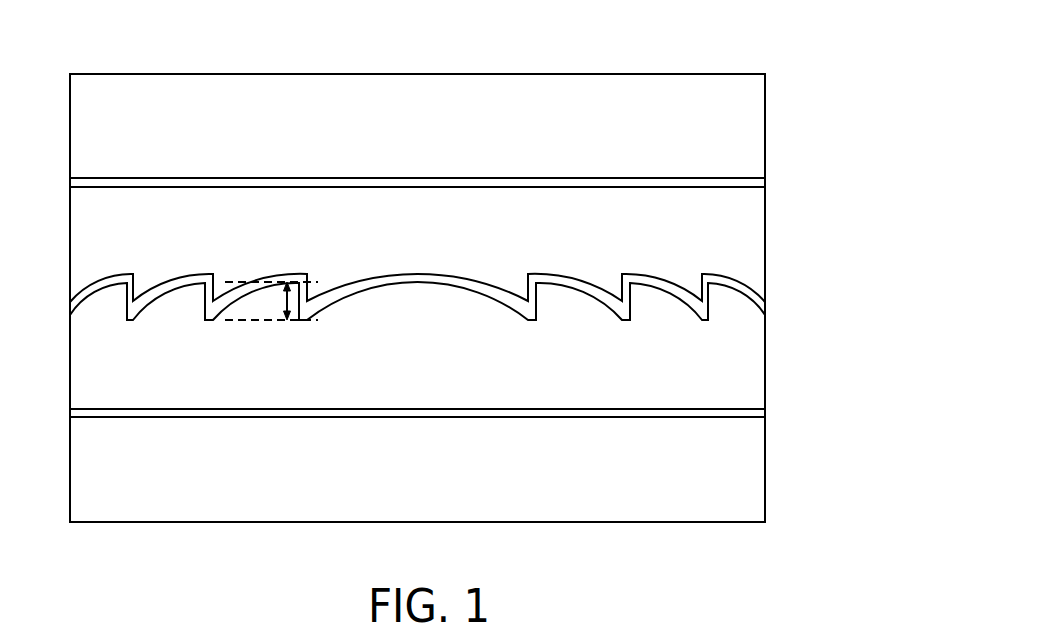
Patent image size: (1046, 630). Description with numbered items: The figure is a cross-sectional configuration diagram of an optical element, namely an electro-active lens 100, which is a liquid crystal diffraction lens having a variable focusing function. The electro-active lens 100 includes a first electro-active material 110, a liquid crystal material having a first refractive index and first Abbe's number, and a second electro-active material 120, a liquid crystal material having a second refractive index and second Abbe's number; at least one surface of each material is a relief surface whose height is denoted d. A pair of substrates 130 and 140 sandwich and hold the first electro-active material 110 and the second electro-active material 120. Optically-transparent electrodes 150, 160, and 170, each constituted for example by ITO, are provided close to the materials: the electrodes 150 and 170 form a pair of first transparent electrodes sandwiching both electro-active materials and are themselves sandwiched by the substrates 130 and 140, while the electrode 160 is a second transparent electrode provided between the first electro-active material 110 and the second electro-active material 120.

The electro-active lens 100 is at (825, 27).
The first electro-active material 110 is at (597, 223).
The second electro-active material 120 is at (600, 375).
The substrate 130 is at (728, 132).
The substrate 140 is at (728, 486).
The optically-transparent electrode 150 is at (765, 178).
The optically-transparent electrode 160 is at (765, 308).
The optically-transparent electrode 170 is at (765, 413).